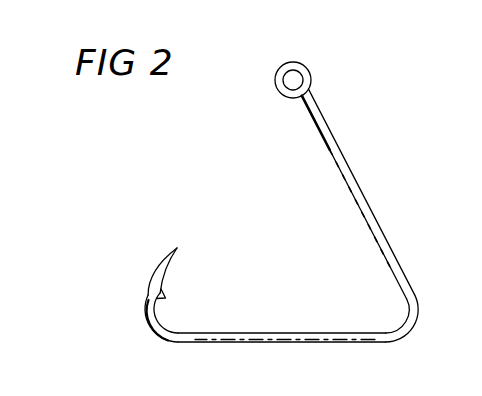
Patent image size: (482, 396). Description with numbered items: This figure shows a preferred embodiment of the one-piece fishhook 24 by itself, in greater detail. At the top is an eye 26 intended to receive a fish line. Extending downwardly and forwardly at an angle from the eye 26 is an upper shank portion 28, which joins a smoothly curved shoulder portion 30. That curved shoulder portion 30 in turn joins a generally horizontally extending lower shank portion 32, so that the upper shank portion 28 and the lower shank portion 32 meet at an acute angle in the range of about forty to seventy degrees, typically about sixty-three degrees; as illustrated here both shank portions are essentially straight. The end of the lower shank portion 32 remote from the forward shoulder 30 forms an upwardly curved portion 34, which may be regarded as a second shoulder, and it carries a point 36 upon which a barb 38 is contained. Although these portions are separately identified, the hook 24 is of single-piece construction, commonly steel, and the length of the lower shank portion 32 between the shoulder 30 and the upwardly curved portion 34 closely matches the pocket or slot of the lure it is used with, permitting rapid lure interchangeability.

The fishhook 24 is at (319, 99).
The eye 26 is at (302, 35).
The upper shank portion 28 is at (355, 181).
The curved shoulder portion 30 is at (407, 325).
The lower shank portion 32 is at (304, 344).
The upwardly curved portion 34 is at (158, 330).
The point 36 is at (178, 248).
The barb 38 is at (160, 295).